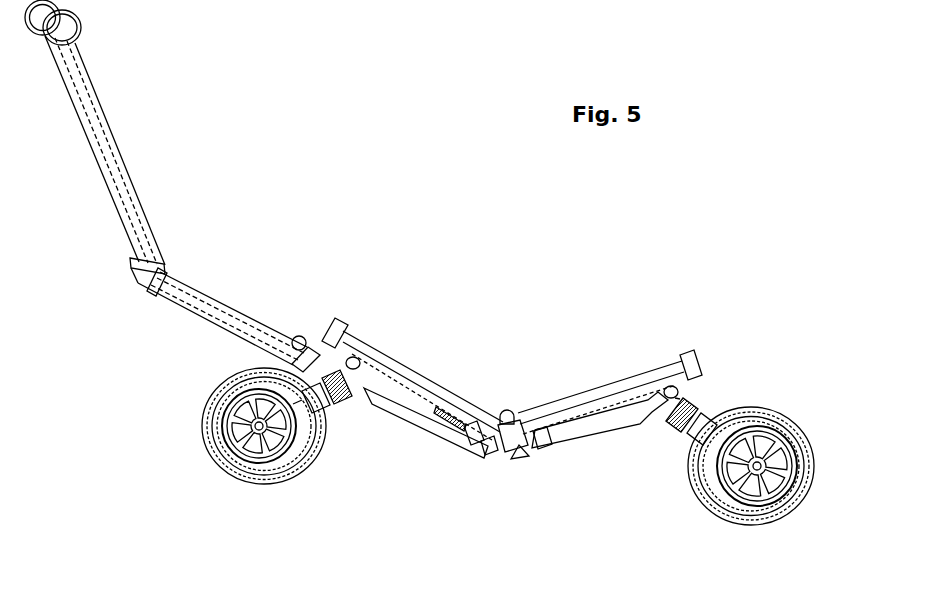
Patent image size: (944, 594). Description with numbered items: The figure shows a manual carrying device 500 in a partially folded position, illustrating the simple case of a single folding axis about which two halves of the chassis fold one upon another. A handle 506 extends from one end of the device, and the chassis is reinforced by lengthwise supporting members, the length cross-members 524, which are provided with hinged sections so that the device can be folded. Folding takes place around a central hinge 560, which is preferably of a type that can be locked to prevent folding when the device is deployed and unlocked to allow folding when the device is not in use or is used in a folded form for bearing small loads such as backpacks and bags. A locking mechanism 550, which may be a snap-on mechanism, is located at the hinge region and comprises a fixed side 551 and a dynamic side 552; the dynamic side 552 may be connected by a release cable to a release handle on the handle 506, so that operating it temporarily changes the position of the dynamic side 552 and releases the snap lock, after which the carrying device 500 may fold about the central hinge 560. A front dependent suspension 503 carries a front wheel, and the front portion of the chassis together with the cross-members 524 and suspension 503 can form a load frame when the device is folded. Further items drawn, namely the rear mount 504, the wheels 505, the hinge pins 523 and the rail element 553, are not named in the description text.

The carrying device 500 is at (710, 256).
The front dependent suspension 503 is at (312, 390).
The rear axle mount 504 is at (700, 409).
The wheel 505 is at (229, 380).
The handle 506 is at (110, 133).
The hinge pin 523 is at (472, 423).
The length cross-members 524 is at (373, 407).
The locking mechanism 550 is at (469, 439).
The fixed side 551 is at (523, 457).
The dynamic side 552 is at (484, 447).
The slider rail 553 is at (452, 433).
The central hinge 560 is at (508, 410).